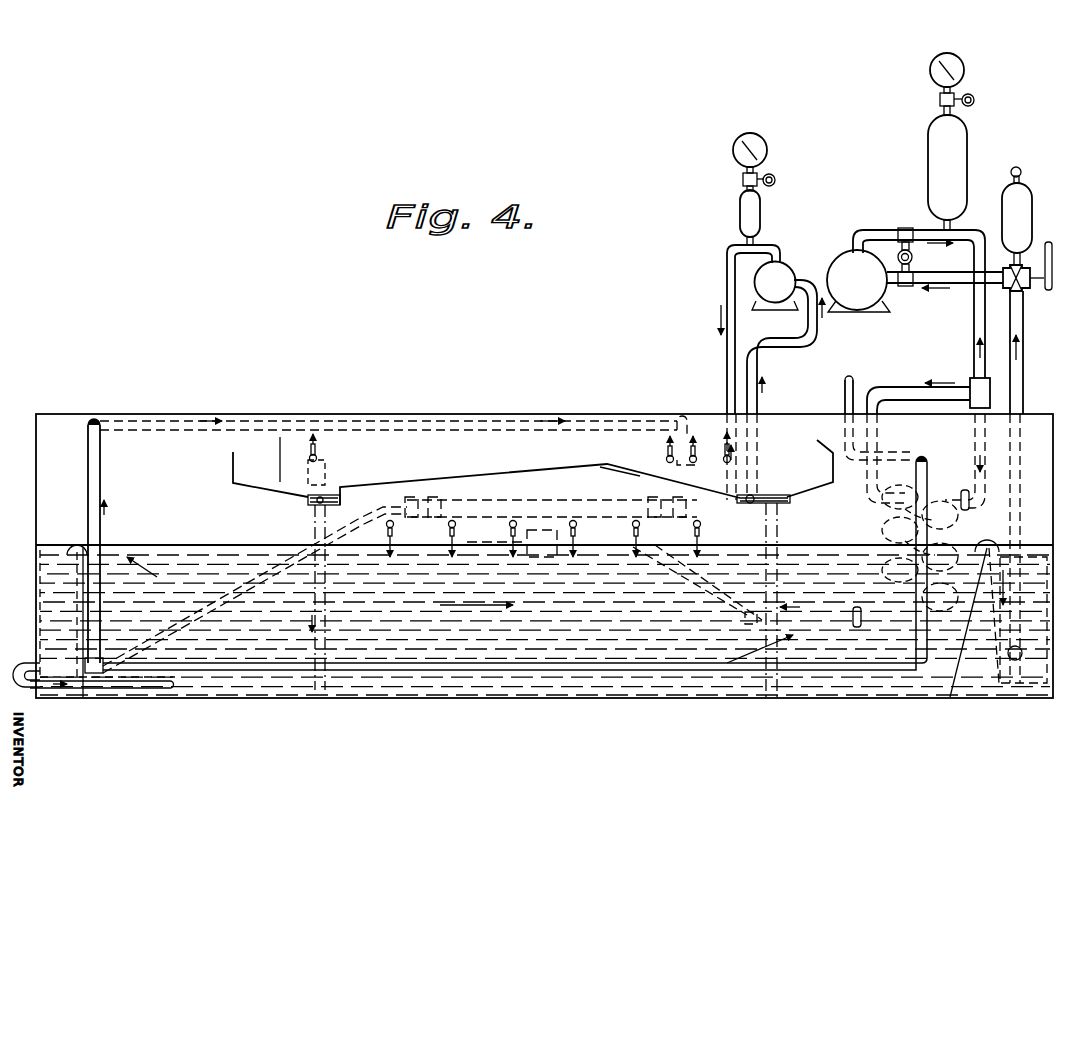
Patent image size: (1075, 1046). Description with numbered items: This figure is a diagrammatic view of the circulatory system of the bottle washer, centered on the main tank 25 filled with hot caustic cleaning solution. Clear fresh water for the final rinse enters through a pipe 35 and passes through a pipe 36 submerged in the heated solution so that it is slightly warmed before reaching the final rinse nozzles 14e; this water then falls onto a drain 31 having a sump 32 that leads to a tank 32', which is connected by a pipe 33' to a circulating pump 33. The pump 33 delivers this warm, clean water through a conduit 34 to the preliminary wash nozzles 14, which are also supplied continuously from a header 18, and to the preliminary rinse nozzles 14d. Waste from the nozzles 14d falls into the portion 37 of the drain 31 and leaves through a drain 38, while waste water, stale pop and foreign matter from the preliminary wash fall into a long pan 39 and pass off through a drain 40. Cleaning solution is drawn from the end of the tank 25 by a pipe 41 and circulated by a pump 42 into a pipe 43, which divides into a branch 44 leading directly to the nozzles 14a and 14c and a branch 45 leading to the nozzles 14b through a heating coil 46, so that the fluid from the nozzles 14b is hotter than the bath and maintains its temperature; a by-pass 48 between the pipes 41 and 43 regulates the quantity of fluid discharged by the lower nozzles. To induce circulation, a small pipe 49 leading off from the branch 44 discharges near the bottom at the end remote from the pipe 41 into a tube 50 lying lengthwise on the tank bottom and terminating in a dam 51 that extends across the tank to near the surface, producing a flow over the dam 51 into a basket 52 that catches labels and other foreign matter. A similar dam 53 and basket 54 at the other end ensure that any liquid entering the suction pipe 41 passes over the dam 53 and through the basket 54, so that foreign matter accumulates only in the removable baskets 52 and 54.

The nozzles 14 is at (316, 447).
The spray nozzles 14a is at (700, 526).
The spray nozzles 14b is at (577, 525).
The spray nozzles 14c is at (456, 526).
The nozzles 14d is at (731, 456).
The nozzles 14e is at (665, 452).
The header 18 is at (326, 465).
The main tank 25 is at (487, 697).
The drain 31 is at (657, 481).
The sump 32 is at (763, 484).
The tank 32' is at (697, 593).
The circulating pump 33 is at (785, 273).
The pipe 33' is at (784, 388).
The conduit 34 is at (727, 270).
The pipe 35 is at (845, 393).
The pipe 36 is at (393, 420).
The portion of drain 37 is at (802, 497).
The drain 38 is at (779, 531).
The pan 39 is at (486, 471).
The drain 40 is at (315, 524).
The pipe 41 is at (944, 276).
The pump 42 is at (915, 281).
The pipe 43 is at (977, 366).
The branch 44 is at (555, 510).
The branch 45 is at (974, 426).
The heating coil 46 is at (950, 533).
The by-pass 48 is at (903, 252).
The small pipe 49 is at (27, 664).
The tube 50 is at (204, 689).
The dam 51 is at (86, 675).
The basket 52 is at (40, 621).
The dam 53 is at (988, 680).
The basket 54 is at (1032, 684).